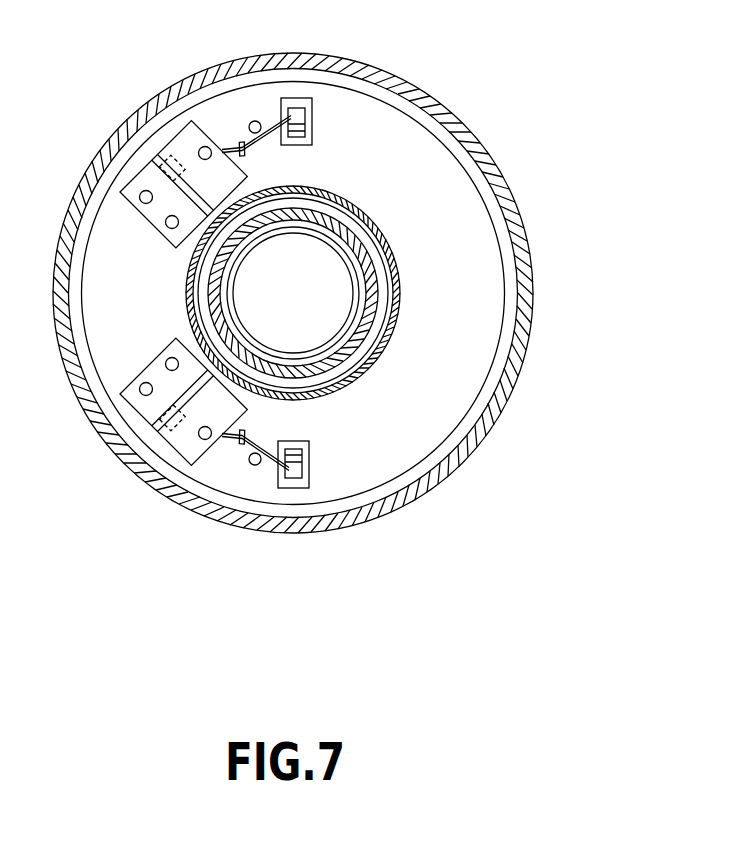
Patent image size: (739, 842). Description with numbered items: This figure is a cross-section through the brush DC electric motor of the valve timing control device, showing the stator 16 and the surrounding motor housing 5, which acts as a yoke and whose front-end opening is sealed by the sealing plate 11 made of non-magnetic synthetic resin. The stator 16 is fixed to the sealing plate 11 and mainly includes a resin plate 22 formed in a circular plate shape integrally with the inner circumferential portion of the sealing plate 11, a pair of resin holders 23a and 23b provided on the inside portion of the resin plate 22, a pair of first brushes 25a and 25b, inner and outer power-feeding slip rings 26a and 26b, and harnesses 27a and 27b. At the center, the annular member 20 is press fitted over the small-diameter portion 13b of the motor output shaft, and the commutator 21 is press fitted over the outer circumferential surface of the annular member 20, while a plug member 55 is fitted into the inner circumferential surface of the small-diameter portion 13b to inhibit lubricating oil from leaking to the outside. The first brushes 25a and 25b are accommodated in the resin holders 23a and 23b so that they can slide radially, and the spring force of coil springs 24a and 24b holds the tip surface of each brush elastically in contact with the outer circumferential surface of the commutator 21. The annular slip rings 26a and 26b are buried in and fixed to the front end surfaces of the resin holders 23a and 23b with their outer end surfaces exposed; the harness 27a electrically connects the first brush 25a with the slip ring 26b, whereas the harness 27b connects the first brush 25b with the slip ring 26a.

The motor housing 5 is at (524, 312).
The sealing plate 11 is at (500, 355).
The small-diameter portion 13b is at (478, 425).
The stator 16 is at (541, 266).
The annular member 20 is at (383, 235).
The commutator 21 is at (352, 207).
The resin plate 22 is at (437, 407).
The resin holder 23a is at (165, 170).
The resin holder 23b is at (152, 424).
The coil spring 24a is at (150, 158).
The coil spring 24b is at (150, 437).
The first brush 25a is at (223, 226).
The first brush 25b is at (244, 355).
The inner power-feeding slip ring 26a is at (298, 488).
The outer power-feeding slip ring 26b is at (312, 112).
The harness 27a is at (247, 137).
The harness 27b is at (283, 457).
The plug member 55 is at (332, 322).